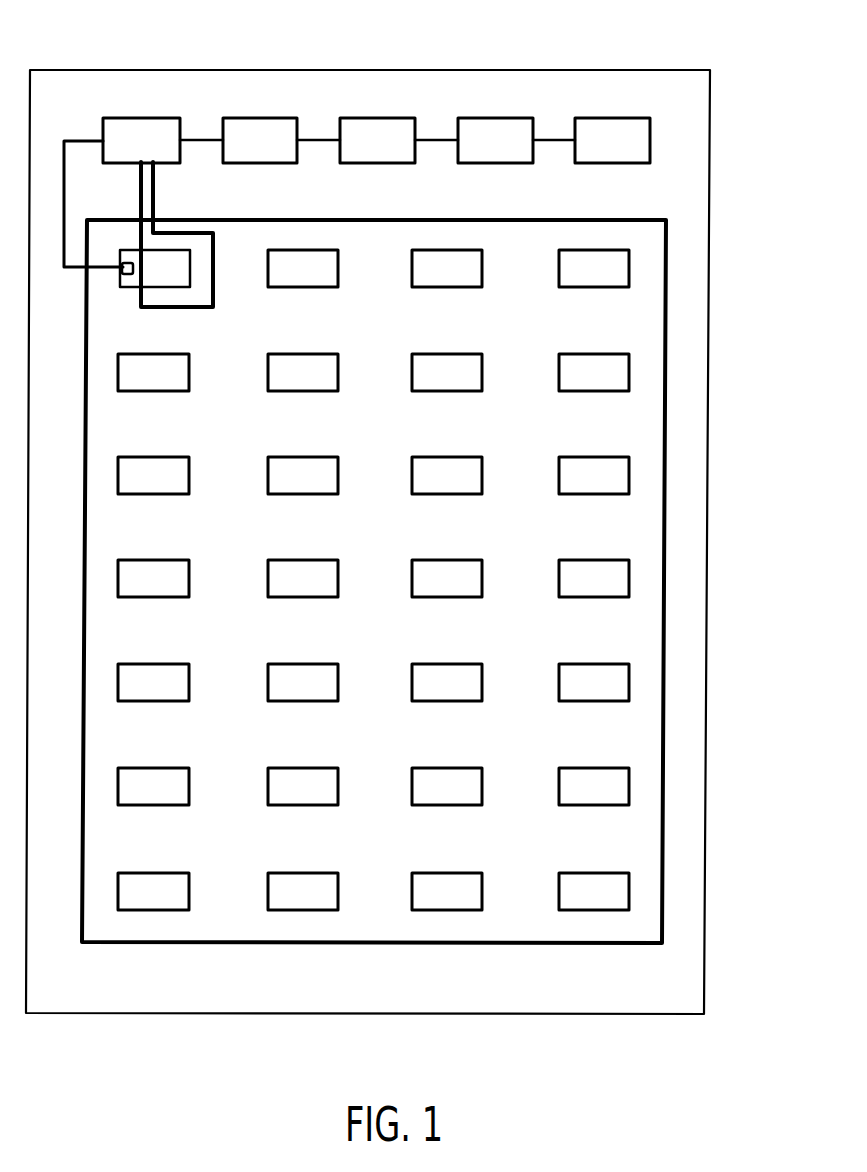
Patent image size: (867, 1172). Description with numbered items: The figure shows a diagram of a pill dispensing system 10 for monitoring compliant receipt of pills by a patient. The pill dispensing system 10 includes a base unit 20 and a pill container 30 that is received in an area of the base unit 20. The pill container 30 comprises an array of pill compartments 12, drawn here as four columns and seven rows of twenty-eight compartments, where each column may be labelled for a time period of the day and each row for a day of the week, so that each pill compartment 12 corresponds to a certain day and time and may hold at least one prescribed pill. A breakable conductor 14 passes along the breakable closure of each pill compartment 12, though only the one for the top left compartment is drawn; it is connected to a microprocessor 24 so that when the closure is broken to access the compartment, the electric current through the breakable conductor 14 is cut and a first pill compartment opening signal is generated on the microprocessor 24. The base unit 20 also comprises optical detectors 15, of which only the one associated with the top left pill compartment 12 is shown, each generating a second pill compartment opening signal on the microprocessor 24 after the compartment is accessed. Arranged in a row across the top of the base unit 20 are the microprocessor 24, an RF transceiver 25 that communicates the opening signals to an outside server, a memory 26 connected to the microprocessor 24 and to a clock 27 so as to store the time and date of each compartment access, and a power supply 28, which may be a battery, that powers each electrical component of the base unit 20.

The pill dispensing system 10 is at (440, 523).
The pill compartment 12 is at (133, 250).
The breakable conductor 14 is at (215, 256).
The optical detector 15 is at (128, 276).
The base unit 20 is at (713, 525).
The microprocessor 24 is at (145, 118).
The RF transceiver 25 is at (258, 118).
The memory 26 is at (375, 118).
The clock 27 is at (498, 118).
The power supply 28 is at (612, 118).
The pill container 30 is at (680, 305).